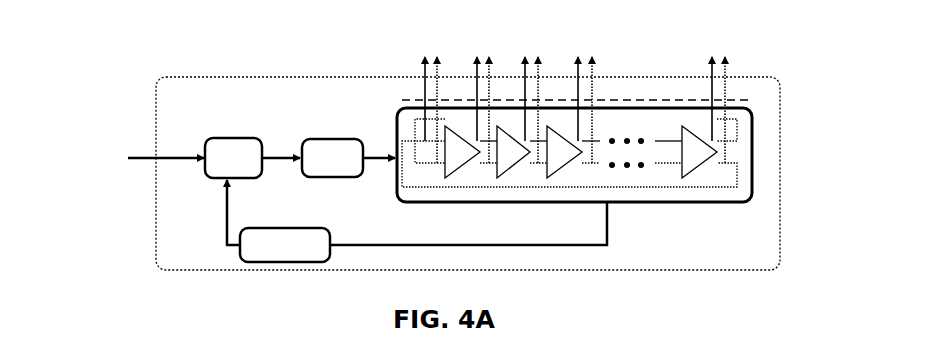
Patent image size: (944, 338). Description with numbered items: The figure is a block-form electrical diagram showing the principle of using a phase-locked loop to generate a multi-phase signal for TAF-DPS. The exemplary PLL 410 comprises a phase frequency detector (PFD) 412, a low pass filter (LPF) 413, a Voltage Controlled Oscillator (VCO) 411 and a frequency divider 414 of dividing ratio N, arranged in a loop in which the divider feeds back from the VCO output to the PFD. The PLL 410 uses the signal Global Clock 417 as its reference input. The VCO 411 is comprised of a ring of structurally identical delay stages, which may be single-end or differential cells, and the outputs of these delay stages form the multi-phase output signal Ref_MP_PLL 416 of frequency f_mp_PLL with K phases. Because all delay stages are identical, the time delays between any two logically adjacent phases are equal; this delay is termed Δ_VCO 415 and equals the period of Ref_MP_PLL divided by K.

The PLL 410 is at (290, 40).
The Voltage Controlled Oscillator (VCO) 411 is at (745, 219).
The phase frequency detector (PFD) 412 is at (240, 130).
The low pass filter (LPF) 413 is at (333, 130).
The frequency divider 414 is at (303, 222).
The time delay Δ_VCO 415 is at (690, 39).
The multi-phase signal Ref_MP_PLL 416 is at (758, 55).
The Global Clock 417 is at (80, 127).